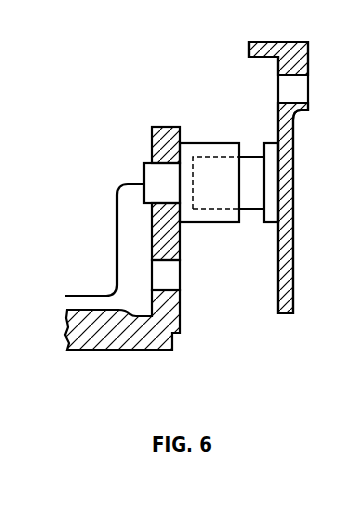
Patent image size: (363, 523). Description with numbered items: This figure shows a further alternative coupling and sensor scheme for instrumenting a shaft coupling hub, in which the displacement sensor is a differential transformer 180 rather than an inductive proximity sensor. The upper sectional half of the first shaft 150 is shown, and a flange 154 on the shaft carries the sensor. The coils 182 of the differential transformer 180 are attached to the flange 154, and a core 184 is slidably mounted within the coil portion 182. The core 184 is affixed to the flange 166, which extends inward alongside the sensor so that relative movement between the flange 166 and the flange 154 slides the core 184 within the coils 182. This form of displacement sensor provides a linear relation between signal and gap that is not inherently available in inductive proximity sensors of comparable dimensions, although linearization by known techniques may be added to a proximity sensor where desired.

The first shaft 150 is at (113, 343).
The flange 154 is at (152, 142).
The flange 166 is at (279, 125).
The differential transformer 180 is at (200, 141).
The coils 182 is at (196, 142).
The core 184 is at (244, 169).